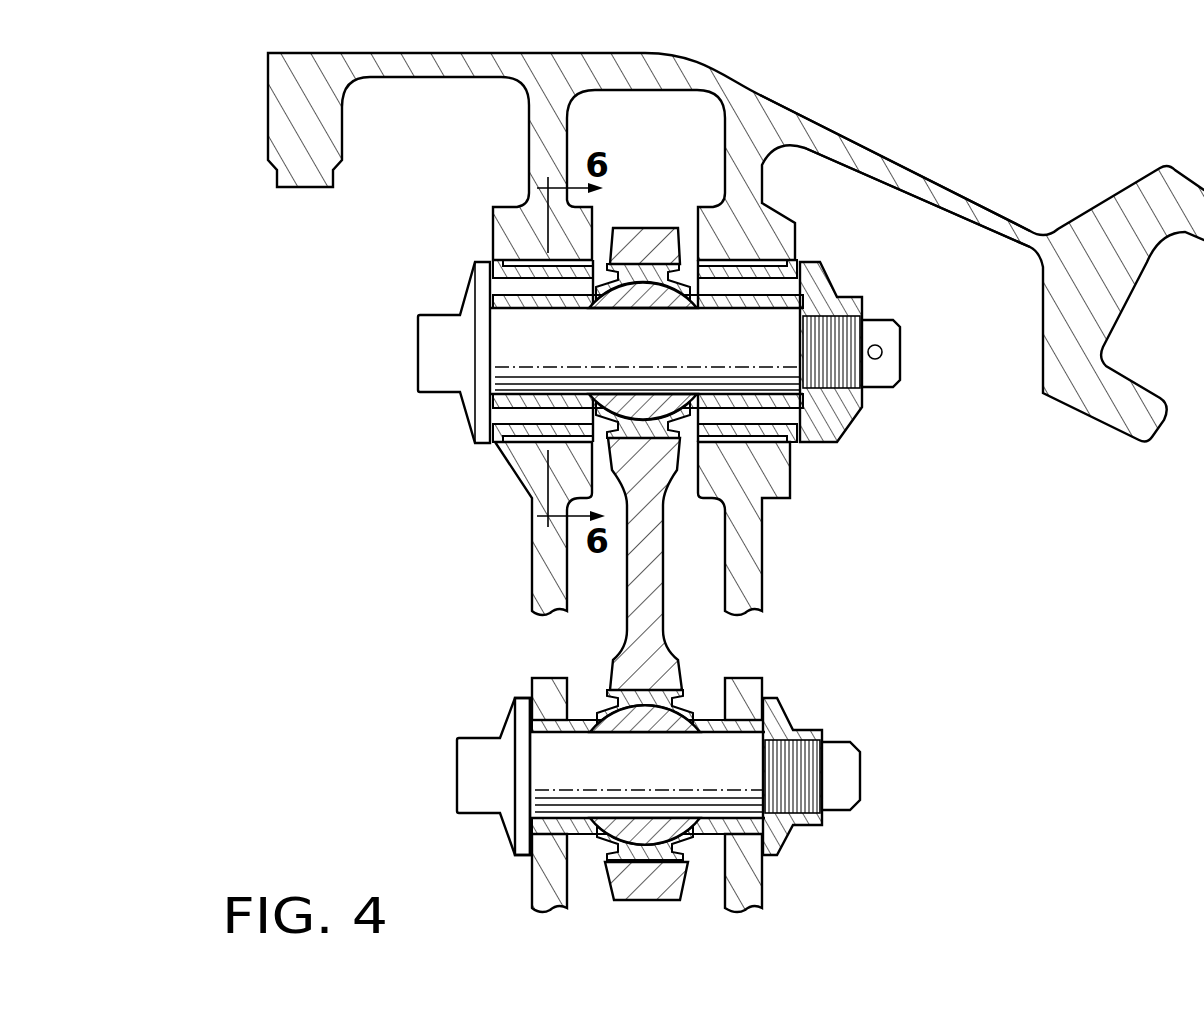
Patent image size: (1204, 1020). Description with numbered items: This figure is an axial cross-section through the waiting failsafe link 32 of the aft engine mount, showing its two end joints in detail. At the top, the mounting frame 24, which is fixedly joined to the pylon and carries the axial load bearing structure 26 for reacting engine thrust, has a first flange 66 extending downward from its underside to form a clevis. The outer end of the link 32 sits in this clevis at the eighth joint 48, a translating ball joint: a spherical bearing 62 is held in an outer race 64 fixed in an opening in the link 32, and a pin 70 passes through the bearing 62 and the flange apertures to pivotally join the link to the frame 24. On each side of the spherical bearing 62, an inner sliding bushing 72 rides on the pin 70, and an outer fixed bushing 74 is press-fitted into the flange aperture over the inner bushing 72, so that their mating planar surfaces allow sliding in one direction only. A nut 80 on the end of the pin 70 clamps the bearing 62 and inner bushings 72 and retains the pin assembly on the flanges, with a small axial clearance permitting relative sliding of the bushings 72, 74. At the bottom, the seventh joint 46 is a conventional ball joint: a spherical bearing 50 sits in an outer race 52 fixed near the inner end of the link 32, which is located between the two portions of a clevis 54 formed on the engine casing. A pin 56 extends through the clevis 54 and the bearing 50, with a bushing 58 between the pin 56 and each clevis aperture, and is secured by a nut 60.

The mounting frame 24 is at (362, 63).
The axial load bearing structure 26 is at (930, 192).
The waiting failsafe link 32 is at (612, 661).
The seventh joint 46 is at (420, 781).
The eighth joint 48 is at (374, 352).
The spherical bearing 50 is at (650, 729).
The outer race 52 is at (645, 862).
The clevis 54 is at (753, 891).
The pin 56 is at (840, 786).
The bushing 58 is at (545, 850).
The nut 60 is at (777, 838).
The spherical bearing 62 is at (673, 403).
The outer race 64 is at (632, 422).
The first flange 66 is at (507, 465).
The pin 70 is at (905, 350).
The inner sliding bushing 72 is at (497, 303).
The outer fixed bushing 74 is at (496, 262).
The nut 80 is at (840, 403).